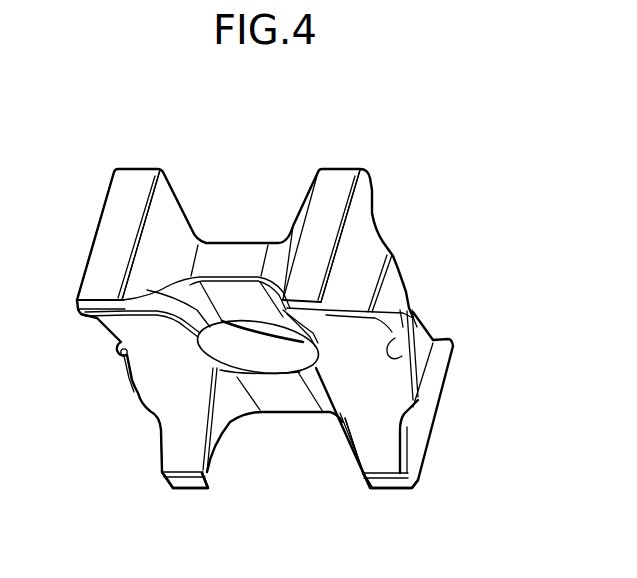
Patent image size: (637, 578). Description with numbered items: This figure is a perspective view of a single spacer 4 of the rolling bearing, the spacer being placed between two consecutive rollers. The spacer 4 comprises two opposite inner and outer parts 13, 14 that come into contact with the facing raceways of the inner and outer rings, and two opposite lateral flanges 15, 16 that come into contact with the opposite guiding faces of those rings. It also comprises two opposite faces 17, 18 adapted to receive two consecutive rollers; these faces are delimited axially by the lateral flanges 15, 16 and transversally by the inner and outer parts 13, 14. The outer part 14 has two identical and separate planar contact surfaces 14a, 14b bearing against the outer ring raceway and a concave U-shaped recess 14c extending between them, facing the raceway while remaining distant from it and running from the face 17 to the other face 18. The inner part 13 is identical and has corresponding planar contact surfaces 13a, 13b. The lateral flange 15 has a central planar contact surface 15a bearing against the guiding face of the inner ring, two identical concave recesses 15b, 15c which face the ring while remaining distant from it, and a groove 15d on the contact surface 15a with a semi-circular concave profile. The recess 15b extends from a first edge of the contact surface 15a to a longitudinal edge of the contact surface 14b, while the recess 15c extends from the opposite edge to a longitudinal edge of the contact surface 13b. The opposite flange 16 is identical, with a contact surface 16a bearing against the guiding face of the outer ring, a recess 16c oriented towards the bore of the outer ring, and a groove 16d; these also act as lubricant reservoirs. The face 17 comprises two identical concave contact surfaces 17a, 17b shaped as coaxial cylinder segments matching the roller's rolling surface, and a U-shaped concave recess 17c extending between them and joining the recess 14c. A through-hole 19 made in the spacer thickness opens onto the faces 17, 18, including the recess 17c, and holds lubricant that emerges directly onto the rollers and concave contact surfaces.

The spacer 4 is at (402, 149).
The inner part 13 is at (208, 486).
The planar contact surface 13a is at (173, 491).
The planar contact surface 13b is at (396, 490).
The outer part 14 is at (353, 167).
The planar contact surface 14a is at (130, 175).
The planar contact surface 14b is at (338, 177).
The concave recess 14c is at (175, 238).
The lateral flange 15 is at (401, 274).
The central planar contact surface 15a is at (404, 290).
The concave recess 15b is at (371, 208).
The concave recess 15c is at (447, 371).
The groove 15d is at (406, 334).
The lateral flange 16 is at (133, 393).
The central planar contact surface 16a is at (130, 377).
The concave recess 16c is at (160, 456).
The groove 16d is at (121, 351).
The face 17 is at (362, 420).
The concave contact surface 17a is at (172, 382).
The concave contact surface 17b is at (383, 424).
The concave recess 17c is at (287, 408).
The face 18 is at (240, 236).
The through-hole 19 is at (251, 343).